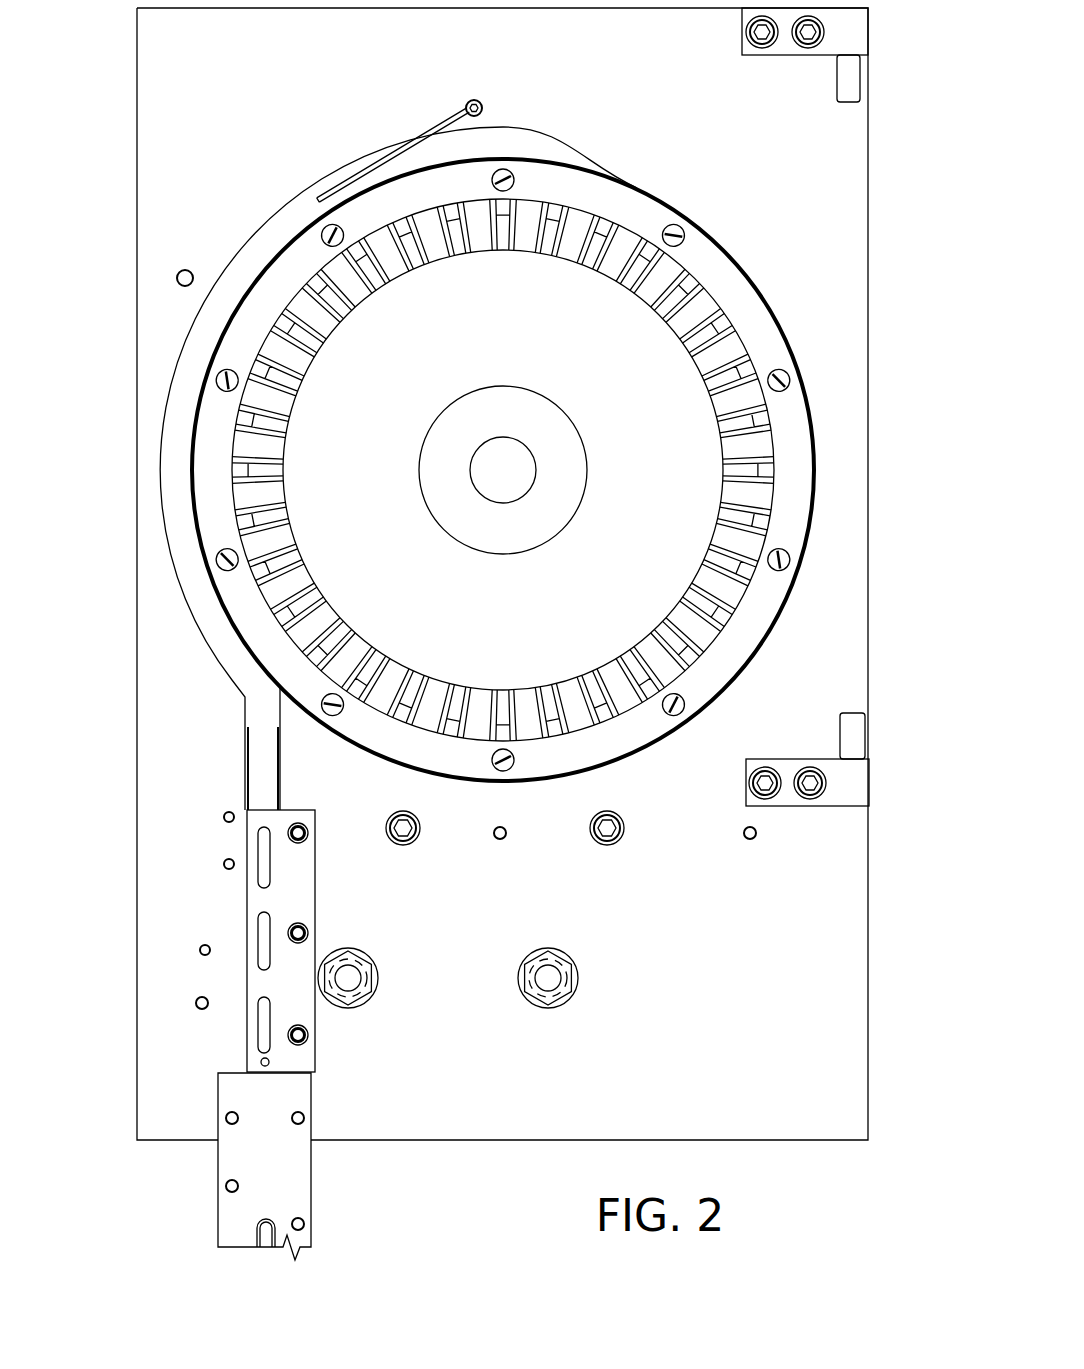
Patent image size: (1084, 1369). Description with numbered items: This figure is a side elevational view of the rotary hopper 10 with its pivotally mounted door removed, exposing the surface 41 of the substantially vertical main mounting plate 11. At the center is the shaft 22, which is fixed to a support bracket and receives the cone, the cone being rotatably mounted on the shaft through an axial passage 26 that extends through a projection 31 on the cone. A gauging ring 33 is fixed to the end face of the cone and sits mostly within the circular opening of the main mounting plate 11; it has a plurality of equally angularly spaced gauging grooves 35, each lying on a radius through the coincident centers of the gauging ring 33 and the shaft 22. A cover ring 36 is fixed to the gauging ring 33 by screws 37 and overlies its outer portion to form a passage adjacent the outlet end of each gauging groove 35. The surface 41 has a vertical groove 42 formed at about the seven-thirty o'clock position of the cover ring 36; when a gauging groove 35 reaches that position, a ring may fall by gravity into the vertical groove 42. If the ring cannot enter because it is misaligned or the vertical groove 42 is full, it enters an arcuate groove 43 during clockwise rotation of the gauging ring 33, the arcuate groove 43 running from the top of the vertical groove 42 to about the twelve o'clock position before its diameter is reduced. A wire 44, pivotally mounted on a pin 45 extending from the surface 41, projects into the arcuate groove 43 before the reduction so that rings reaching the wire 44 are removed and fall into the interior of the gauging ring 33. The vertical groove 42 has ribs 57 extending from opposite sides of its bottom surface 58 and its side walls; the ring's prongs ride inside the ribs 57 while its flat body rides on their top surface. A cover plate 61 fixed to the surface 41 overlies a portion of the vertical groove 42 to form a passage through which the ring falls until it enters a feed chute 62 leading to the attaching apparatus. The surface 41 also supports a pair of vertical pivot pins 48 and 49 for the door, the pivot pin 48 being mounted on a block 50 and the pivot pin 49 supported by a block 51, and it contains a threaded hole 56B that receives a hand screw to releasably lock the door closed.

The rotary hopper 10 is at (897, 608).
The main mounting plate 11 is at (881, 937).
The shaft 22 is at (520, 468).
The axial passage 26 is at (502, 497).
The projection 31 is at (430, 512).
The gauging ring 33 is at (503, 470).
The gauging grooves 35 is at (430, 248).
The cover ring 36 is at (748, 628).
The screws 37 is at (703, 707).
The surface 41 is at (786, 1092).
The vertical groove 42 is at (268, 716).
The arcuate groove 43 is at (255, 242).
The wire 44 is at (398, 150).
The pin 45 is at (482, 106).
The pivot pin 48 is at (837, 80).
The pivot pin 49 is at (840, 724).
The block 50 is at (742, 40).
The block 51 is at (815, 806).
The threaded hole 56B is at (178, 272).
The ribs 57 is at (250, 800).
The bottom surface 58 is at (262, 760).
The cover plate 61 is at (318, 1025).
The feed chute 62 is at (311, 1104).